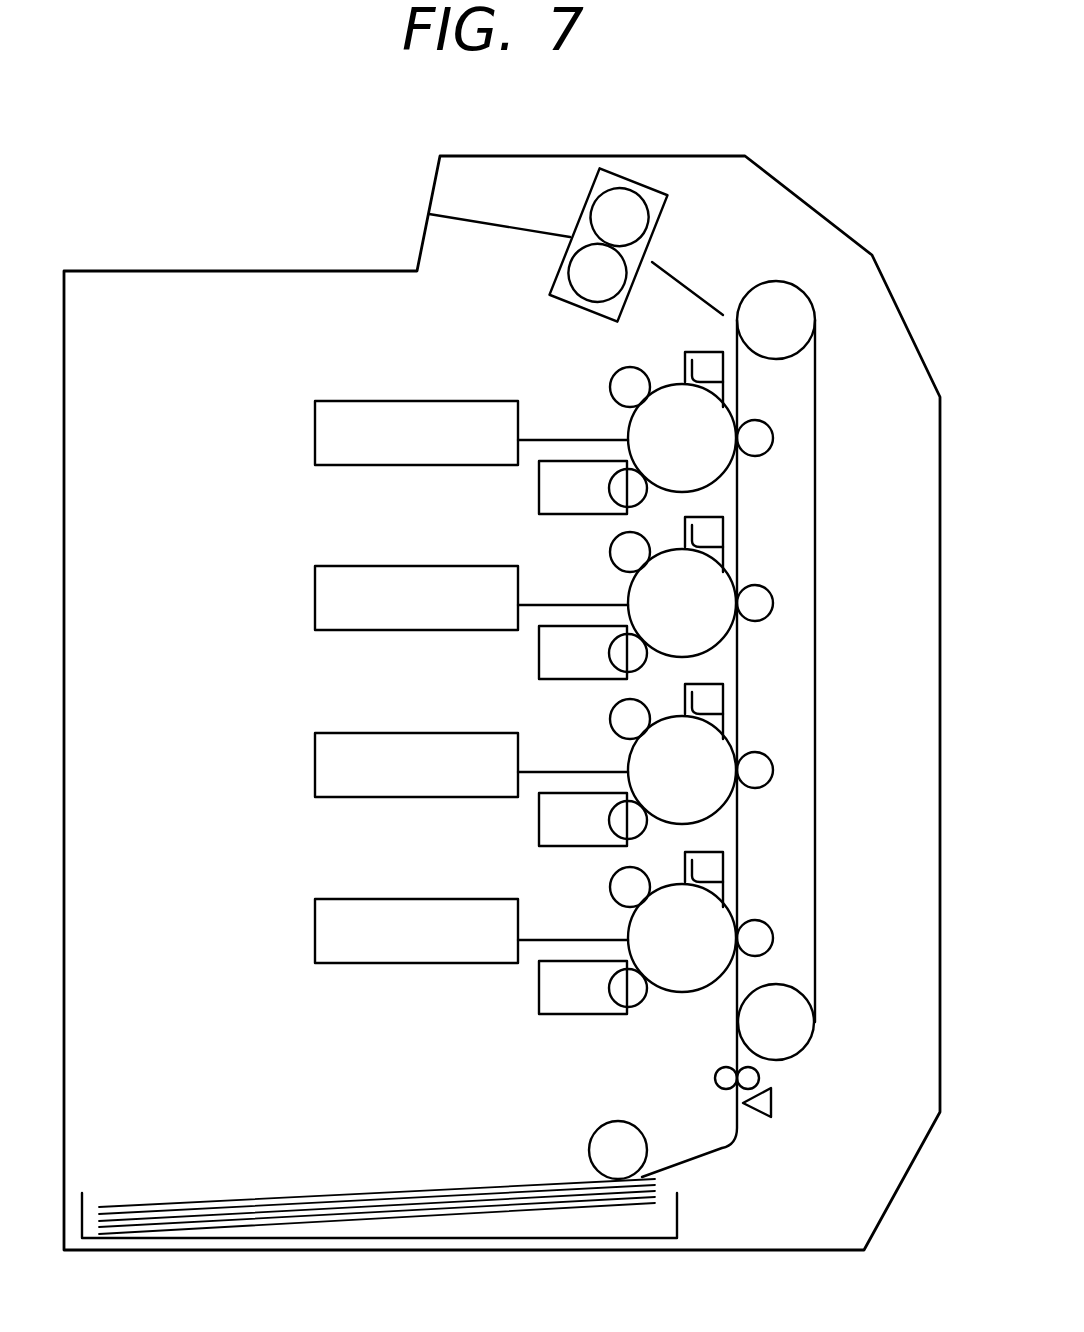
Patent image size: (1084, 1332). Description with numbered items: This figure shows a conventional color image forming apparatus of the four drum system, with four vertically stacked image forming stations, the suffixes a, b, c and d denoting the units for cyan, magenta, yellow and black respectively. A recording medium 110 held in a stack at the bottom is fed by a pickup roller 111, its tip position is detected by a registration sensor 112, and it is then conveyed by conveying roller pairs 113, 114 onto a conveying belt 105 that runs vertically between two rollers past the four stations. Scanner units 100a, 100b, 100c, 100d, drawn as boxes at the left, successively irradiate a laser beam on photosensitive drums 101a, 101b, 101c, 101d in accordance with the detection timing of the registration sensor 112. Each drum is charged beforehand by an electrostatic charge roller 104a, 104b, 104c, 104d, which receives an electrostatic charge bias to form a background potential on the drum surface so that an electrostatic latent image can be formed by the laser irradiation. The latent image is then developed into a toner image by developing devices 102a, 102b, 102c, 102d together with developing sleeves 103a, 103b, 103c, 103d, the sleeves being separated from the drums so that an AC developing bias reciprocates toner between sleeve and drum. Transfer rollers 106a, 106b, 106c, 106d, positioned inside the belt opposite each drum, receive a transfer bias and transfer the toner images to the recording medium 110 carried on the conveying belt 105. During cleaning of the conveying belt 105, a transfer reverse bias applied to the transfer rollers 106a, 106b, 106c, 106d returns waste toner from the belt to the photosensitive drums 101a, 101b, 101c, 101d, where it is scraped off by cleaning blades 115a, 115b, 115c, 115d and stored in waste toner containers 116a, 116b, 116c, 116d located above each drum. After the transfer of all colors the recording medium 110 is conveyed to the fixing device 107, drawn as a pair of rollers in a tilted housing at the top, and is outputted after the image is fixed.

The scanner unit 100a is at (315, 936).
The scanner unit 100b is at (315, 768).
The scanner unit 100c is at (315, 601).
The scanner unit 100d is at (315, 436).
The photosensitive drum 101a is at (720, 958).
The photosensitive drum 101b is at (720, 790).
The photosensitive drum 101c is at (720, 623).
The photosensitive drum 101d is at (720, 458).
The developing device 102a is at (539, 985).
The developing device 102b is at (539, 817).
The developing device 102c is at (539, 650).
The developing device 102d is at (539, 485).
The developing sleeve 103a is at (611, 998).
The developing sleeve 103b is at (611, 832).
The developing sleeve 103c is at (611, 665).
The developing sleeve 103d is at (611, 500).
The electrostatic charge roller 104a is at (615, 898).
The electrostatic charge roller 104b is at (615, 731).
The electrostatic charge roller 104c is at (615, 564).
The electrostatic charge roller 104d is at (615, 399).
The conveying belt 105 is at (815, 990).
The transfer roller 106a is at (773, 937).
The transfer roller 106b is at (773, 769).
The transfer roller 106c is at (773, 602).
The transfer roller 106d is at (773, 437).
The fixing device 107 is at (662, 212).
The recording medium 110 is at (283, 1195).
The pickup roller 111 is at (589, 1148).
The registration sensor 112 is at (765, 1118).
The conveying roller pair 113 is at (714, 1078).
The conveying roller pair 114 is at (760, 1078).
The cleaning blade 115a is at (723, 882).
The cleaning blade 115b is at (723, 714).
The cleaning blade 115c is at (723, 547).
The cleaning blade 115d is at (723, 382).
The waste toner container 116a is at (723, 867).
The waste toner container 116b is at (723, 699).
The waste toner container 116c is at (723, 532).
The waste toner container 116d is at (723, 367).